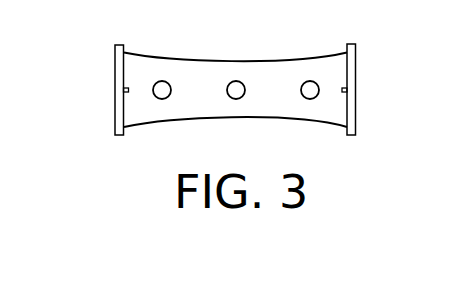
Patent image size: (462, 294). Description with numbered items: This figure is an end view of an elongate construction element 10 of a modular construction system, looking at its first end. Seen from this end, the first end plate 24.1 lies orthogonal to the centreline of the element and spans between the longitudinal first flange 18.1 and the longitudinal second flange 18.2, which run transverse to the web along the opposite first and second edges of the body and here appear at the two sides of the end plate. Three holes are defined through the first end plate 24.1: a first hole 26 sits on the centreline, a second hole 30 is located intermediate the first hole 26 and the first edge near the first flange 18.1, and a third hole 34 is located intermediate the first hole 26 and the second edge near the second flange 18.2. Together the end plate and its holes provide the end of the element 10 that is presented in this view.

The elongate construction element 10 is at (367, 125).
The first flange 18.1 is at (356, 52).
The second flange 18.2 is at (115, 55).
The first end plate 24.1 is at (272, 70).
The first hole 26 is at (237, 98).
The second hole 30 is at (311, 98).
The third hole 34 is at (163, 98).